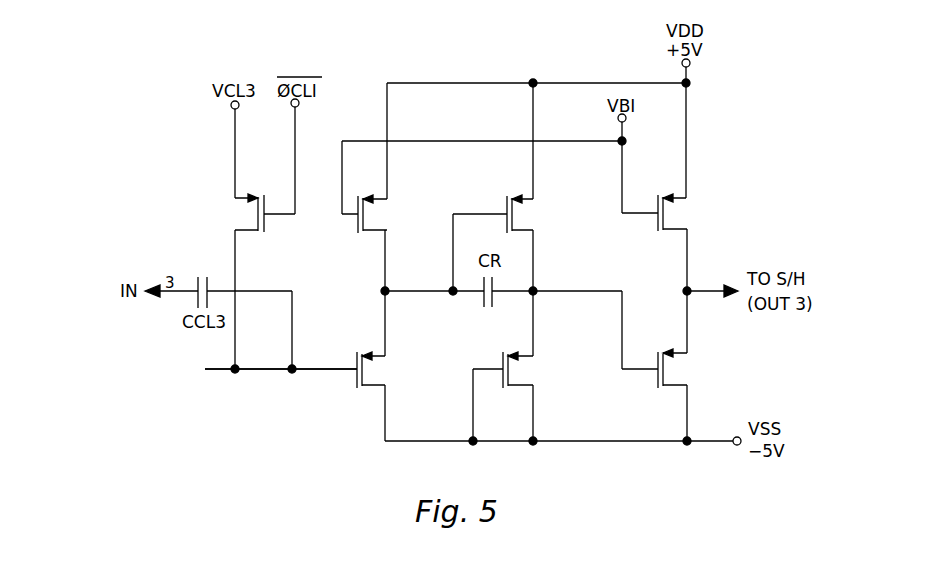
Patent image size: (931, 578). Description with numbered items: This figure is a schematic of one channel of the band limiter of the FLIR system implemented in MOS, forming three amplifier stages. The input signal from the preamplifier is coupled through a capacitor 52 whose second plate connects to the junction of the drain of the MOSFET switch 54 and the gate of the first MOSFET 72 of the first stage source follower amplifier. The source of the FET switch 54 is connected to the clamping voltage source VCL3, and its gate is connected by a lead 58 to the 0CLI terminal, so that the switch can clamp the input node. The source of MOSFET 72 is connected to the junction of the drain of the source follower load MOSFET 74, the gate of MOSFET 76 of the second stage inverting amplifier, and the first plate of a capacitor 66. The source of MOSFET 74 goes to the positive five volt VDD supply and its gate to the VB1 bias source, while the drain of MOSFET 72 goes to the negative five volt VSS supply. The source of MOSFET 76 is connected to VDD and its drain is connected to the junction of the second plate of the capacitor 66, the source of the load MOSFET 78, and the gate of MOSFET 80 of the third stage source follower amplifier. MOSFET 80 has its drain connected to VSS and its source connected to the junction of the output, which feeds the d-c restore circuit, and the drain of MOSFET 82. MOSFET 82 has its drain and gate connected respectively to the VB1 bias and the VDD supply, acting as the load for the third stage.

The capacitor 52 is at (207, 275).
The MOSFET switch 54 is at (238, 215).
The lead 58 is at (296, 147).
The capacitor 66 is at (485, 310).
The first MOSFET of first stage source follower amplifier 72 is at (358, 393).
The MOSFET of source follower amplifier 74 is at (358, 236).
The MOSFET of second stage inverting amplifier 76 is at (509, 193).
The load MOSFET 78 is at (515, 375).
The MOSFET of third stage source follower amplifier 80 is at (670, 373).
The MOSFET 82 is at (673, 217).